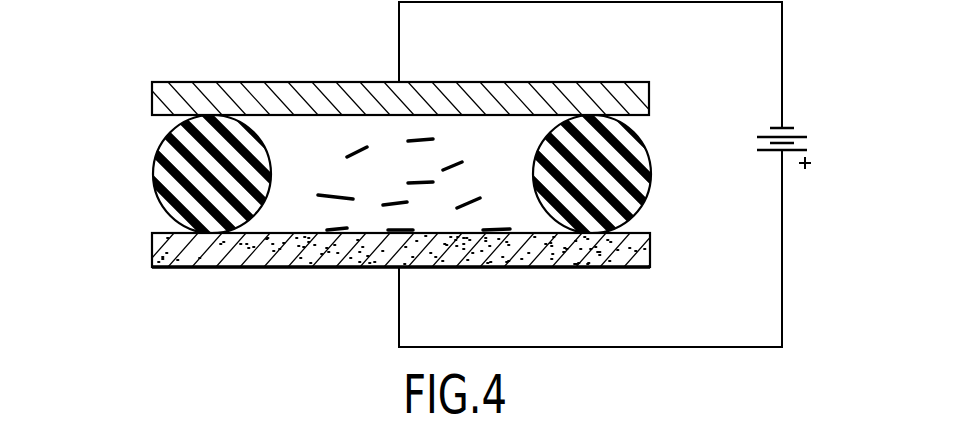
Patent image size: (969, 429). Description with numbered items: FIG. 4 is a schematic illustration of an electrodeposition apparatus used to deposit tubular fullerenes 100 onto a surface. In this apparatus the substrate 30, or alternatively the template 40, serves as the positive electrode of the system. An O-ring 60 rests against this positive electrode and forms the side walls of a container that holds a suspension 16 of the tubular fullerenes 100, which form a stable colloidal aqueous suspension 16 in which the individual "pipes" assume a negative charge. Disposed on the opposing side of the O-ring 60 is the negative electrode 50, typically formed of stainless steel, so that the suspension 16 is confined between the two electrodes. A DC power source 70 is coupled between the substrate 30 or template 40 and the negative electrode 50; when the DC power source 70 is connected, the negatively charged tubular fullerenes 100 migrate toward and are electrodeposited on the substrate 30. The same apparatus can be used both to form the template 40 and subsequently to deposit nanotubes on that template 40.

The negative electrode 50 is at (165, 81).
The suspension 16 is at (280, 146).
The tubular fullerenes 100 is at (310, 148).
The O-ring 60 is at (152, 195).
The substrate 30 is at (152, 255).
The template 40 is at (399, 250).
The DC power source 70 is at (802, 135).